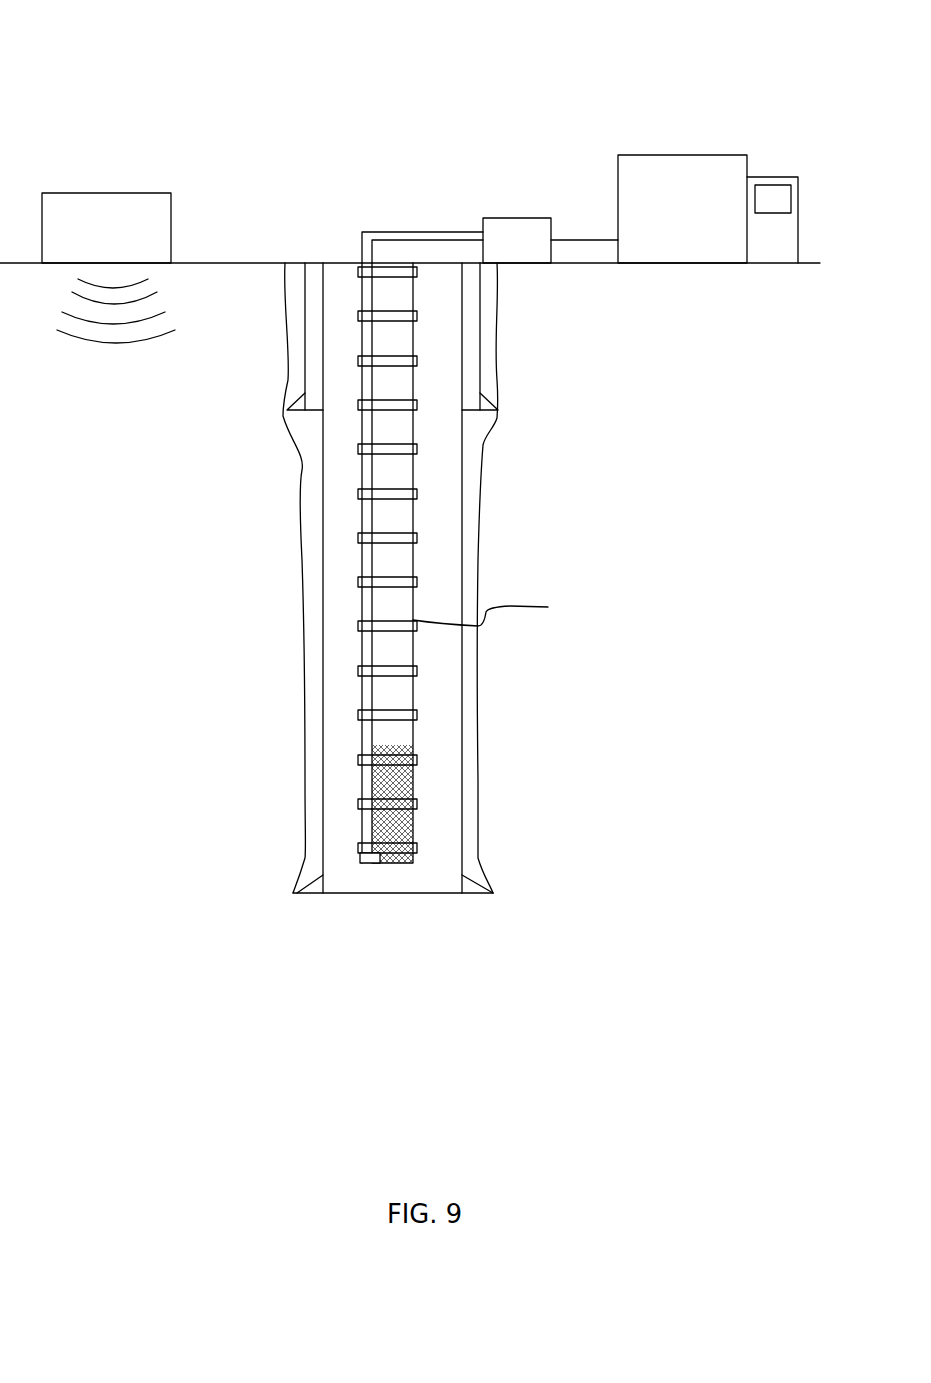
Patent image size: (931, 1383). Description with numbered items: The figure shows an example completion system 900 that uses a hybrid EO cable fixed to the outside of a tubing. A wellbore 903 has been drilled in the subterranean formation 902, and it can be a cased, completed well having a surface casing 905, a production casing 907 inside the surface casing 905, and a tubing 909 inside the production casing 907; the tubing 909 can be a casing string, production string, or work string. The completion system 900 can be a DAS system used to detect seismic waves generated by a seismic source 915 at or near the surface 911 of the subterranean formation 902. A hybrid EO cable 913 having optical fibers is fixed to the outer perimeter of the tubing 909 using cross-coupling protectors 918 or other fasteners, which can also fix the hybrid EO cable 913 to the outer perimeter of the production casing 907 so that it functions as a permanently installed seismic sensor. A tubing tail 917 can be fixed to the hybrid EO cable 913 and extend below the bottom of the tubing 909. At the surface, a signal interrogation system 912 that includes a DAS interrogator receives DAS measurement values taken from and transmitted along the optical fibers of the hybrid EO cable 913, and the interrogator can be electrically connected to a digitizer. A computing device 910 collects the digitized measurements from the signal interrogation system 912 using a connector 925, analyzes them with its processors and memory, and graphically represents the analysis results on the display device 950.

The completion system 900 is at (312, 50).
The subterranean formation 902 is at (758, 395).
The wellbore 903 is at (300, 488).
The surface casing 905 is at (480, 347).
The production casing 907 is at (462, 462).
The tubing 909 is at (413, 513).
The computing device 910 is at (697, 216).
The surface 911 is at (203, 262).
The signal interrogation system 912 is at (532, 253).
The hybrid EO cable 913 is at (365, 377).
The seismic source 915 is at (123, 234).
The tubing tail 917 is at (413, 775).
The cross-coupling protectors 918 is at (498, 611).
The connector 925 is at (562, 239).
The display device 950 is at (773, 185).